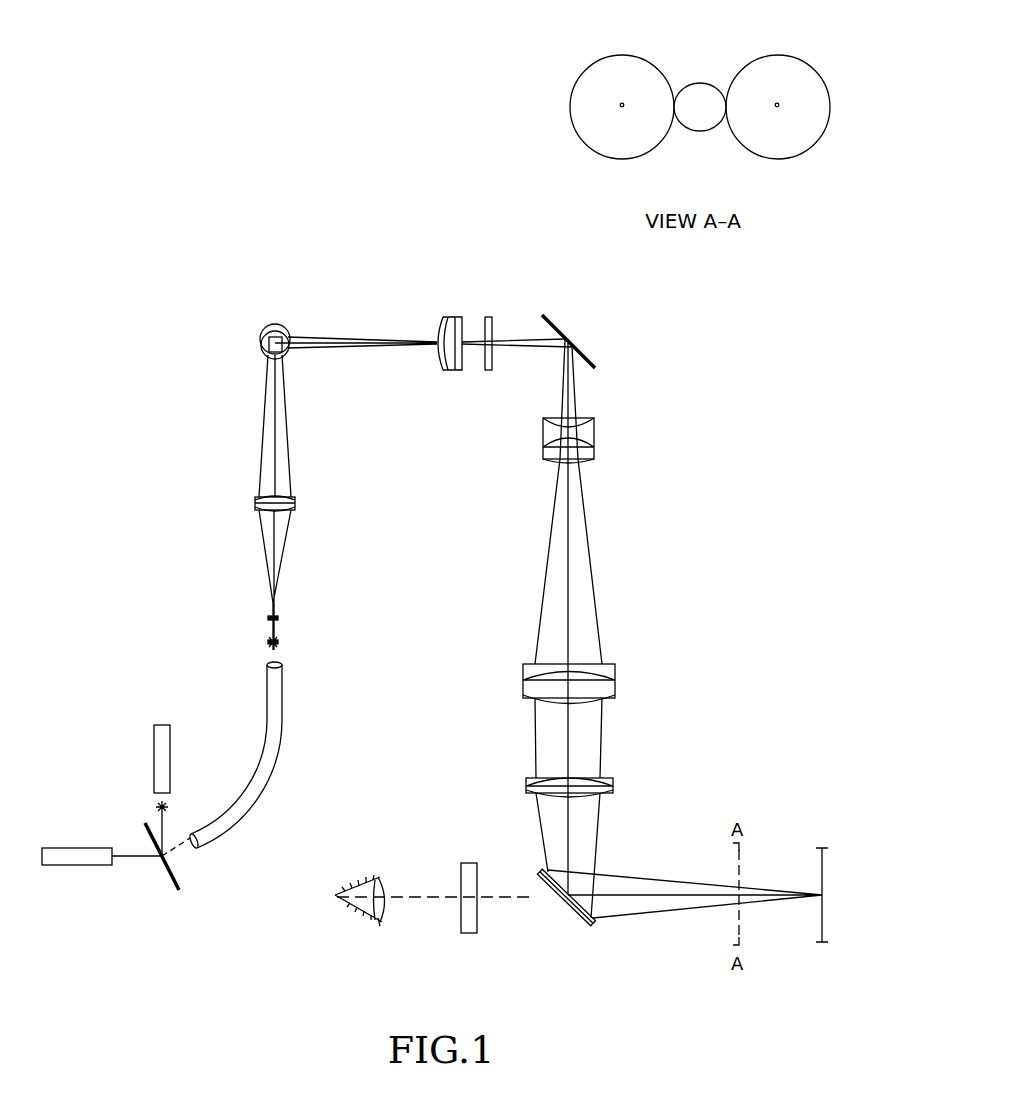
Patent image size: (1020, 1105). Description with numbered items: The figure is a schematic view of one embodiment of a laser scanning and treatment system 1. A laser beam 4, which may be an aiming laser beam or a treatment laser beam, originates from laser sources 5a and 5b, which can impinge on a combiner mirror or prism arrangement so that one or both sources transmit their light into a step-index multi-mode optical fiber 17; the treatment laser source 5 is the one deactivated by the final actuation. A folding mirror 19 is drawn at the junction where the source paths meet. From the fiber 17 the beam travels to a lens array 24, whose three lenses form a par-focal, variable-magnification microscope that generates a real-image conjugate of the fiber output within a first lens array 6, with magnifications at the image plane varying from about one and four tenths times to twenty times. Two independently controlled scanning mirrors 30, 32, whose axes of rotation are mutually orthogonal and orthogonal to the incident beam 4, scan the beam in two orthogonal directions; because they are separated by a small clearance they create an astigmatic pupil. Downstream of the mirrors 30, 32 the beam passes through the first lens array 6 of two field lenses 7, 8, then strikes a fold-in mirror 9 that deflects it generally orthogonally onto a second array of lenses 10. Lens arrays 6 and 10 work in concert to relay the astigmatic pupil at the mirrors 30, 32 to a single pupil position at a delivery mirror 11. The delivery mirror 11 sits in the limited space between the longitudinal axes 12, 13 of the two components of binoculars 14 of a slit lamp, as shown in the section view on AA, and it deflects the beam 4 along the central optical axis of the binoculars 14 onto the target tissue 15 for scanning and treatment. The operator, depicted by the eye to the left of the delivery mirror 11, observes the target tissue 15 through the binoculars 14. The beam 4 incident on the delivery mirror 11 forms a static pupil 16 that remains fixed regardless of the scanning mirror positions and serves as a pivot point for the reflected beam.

The laser system 1 is at (396, 736).
The laser beam 4 is at (262, 570).
The treatment laser source 5 is at (266, 643).
The laser source 5a is at (153, 755).
The laser source 5b is at (80, 847).
The first lens array 6 is at (461, 351).
The lens 7 is at (448, 372).
The lens 8 is at (488, 372).
The fold-in mirror 9 is at (583, 350).
The second array of lenses 10 is at (622, 408).
The delivery mirror 11 is at (700, 82).
The longitudinal axis 12 is at (630, 136).
The longitudinal axis 13 is at (786, 136).
The binoculars 14 is at (460, 876).
The target tissue 15 is at (822, 876).
The static pupil 16 is at (550, 906).
The optical fiber 17 is at (258, 765).
The folding mirror 19 is at (182, 881).
The lens array 24 is at (254, 500).
The scanning mirror 30 is at (262, 331).
The scanning mirror 32 is at (262, 352).